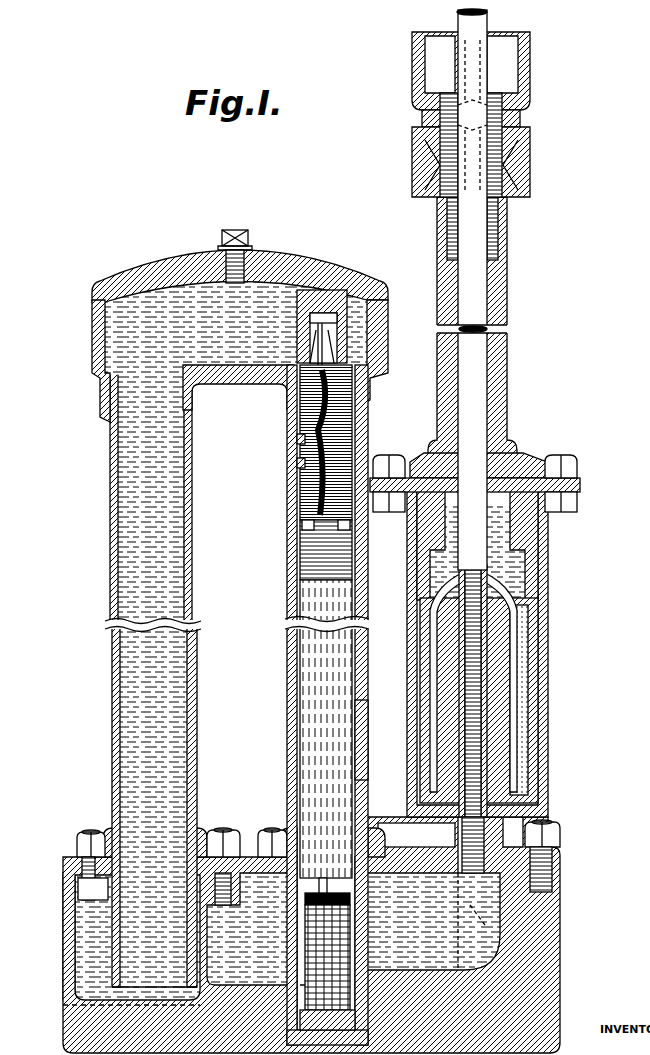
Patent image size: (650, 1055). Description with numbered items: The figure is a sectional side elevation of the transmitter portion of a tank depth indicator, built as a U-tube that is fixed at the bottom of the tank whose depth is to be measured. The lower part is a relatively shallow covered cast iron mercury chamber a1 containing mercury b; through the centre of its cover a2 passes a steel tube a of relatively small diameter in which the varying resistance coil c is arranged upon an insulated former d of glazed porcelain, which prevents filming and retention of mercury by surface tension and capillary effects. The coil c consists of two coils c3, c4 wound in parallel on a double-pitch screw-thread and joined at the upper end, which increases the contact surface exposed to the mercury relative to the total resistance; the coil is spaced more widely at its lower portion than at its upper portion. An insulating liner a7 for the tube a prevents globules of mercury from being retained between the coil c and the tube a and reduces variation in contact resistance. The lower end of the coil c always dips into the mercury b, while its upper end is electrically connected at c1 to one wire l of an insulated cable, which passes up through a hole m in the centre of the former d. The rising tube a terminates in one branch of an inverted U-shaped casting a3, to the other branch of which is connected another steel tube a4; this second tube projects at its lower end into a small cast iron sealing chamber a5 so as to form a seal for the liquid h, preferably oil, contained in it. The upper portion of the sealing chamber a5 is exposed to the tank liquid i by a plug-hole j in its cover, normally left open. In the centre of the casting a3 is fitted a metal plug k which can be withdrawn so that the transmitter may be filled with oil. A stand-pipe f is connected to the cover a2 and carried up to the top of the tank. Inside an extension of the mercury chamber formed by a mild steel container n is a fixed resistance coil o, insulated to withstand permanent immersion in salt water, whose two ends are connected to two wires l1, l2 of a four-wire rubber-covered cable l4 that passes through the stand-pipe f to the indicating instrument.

The steel tube a is at (368, 797).
The mercury chamber a1 is at (545, 920).
The cover a2 is at (416, 862).
The inverted U-shaped casting a3 is at (308, 265).
The steel tube a4 is at (112, 545).
The sealing chamber a5 is at (77, 962).
The insulating liner a7 is at (368, 740).
The mercury b is at (432, 921).
The varying resistance coil c is at (300, 484).
The electrical connection c1 is at (322, 318).
The coil c3 is at (300, 440).
The coil c4 is at (300, 462).
The insulated former d is at (328, 877).
The stand-pipe f is at (507, 318).
The liquid h is at (183, 763).
The tank liquid i is at (74, 927).
The plug-hole j is at (63, 872).
The metal plug k is at (234, 240).
The cable wire l is at (322, 352).
The wire l1 is at (437, 655).
The wire l2 is at (522, 637).
The four-wire cable l4 is at (480, 372).
The hole m is at (242, 890).
The mild steel container n is at (540, 735).
The fixed resistance coil o is at (540, 682).